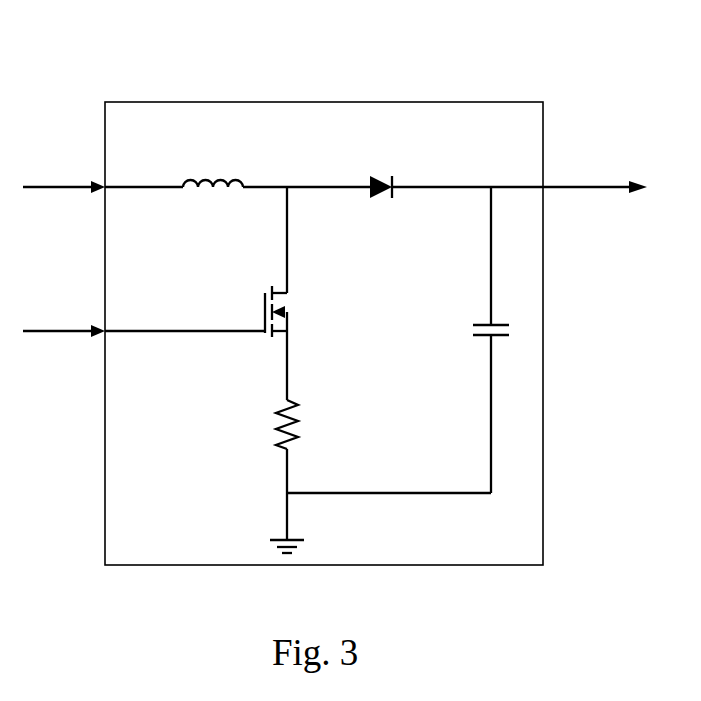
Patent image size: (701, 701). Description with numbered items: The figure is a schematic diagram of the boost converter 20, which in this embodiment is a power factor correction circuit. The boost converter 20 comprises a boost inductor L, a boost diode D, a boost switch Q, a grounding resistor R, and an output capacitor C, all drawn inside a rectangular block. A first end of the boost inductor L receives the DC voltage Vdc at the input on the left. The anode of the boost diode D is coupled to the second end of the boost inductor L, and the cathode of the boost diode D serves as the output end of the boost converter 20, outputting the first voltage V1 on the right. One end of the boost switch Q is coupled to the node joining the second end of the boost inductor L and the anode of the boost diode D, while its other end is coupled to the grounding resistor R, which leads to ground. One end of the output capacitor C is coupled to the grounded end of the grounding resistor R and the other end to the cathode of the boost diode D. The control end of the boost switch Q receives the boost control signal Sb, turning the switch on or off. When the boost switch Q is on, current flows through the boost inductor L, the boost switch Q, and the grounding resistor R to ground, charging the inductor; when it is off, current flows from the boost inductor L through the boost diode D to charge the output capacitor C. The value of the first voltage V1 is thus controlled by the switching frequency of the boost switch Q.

The boost converter 20 is at (457, 102).
The boost inductor L is at (213, 168).
The boost diode D is at (381, 171).
The boost switch Q is at (299, 313).
The grounding resistor R is at (304, 424).
The output capacitor C is at (474, 333).
The DC voltage Vdc is at (64, 172).
The boost control signal Sb is at (144, 314).
The first voltage V1 is at (569, 173).